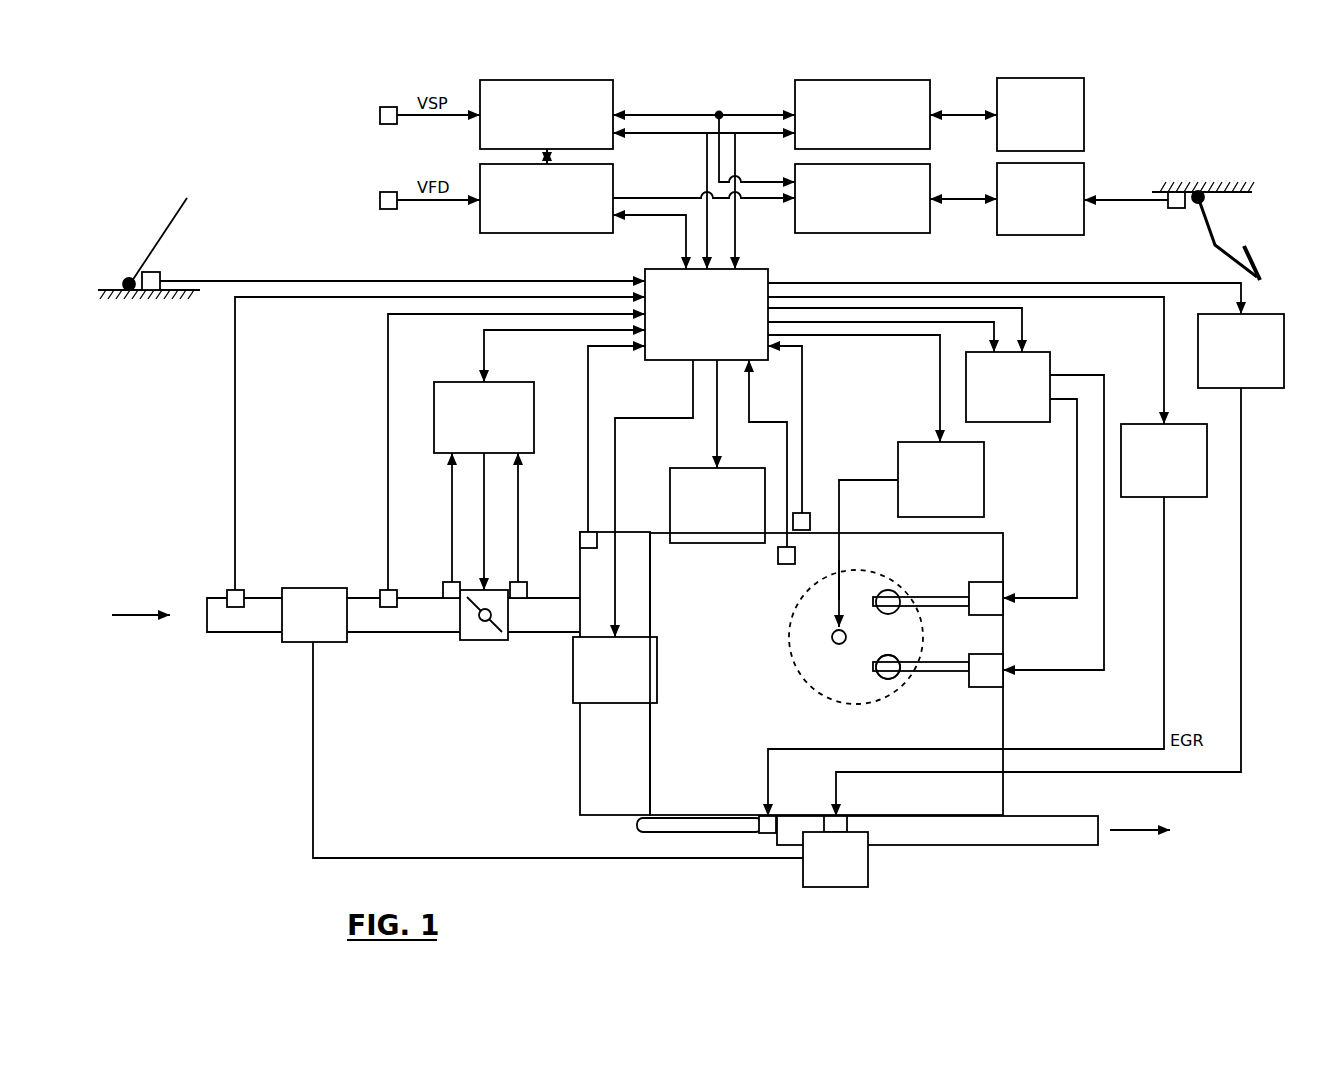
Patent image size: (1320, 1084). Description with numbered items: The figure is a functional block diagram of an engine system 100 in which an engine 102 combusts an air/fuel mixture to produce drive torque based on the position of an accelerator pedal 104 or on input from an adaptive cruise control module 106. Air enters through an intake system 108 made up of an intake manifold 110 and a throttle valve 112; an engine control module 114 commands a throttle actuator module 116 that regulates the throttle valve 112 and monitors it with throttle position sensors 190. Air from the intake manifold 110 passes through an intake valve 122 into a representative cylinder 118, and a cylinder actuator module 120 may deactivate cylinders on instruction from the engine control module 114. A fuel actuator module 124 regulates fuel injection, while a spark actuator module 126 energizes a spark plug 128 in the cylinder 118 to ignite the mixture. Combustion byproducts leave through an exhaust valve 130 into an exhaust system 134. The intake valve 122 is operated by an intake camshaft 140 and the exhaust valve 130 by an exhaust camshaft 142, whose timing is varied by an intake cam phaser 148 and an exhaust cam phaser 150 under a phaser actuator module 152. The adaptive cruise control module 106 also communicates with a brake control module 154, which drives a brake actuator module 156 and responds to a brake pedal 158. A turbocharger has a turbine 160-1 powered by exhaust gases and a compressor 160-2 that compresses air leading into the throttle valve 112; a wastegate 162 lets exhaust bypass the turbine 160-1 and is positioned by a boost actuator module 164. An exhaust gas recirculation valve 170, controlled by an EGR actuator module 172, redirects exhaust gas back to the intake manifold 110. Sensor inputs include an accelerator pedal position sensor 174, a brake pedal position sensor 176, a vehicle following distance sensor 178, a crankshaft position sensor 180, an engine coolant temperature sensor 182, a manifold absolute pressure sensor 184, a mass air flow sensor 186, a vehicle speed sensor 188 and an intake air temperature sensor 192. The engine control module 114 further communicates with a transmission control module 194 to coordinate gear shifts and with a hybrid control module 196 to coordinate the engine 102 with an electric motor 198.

The engine system 100 is at (182, 113).
The engine 102 is at (1003, 544).
The accelerator pedal 104 is at (146, 260).
The adaptive cruise control module 106 is at (613, 178).
The intake system 108 is at (441, 730).
The intake manifold 110 is at (580, 750).
The throttle valve 112 is at (480, 640).
The engine control module 114 is at (768, 272).
The throttle actuator module 116 is at (457, 382).
The cylinder 118 is at (815, 690).
The cylinder actuator module 120 is at (730, 468).
The intake valve 122 is at (892, 590).
The fuel actuator module 124 is at (640, 703).
The spark actuator module 126 is at (984, 481).
The spark plug 128 is at (833, 642).
The exhaust valve 130 is at (890, 679).
The exhaust system 134 is at (1063, 868).
The intake camshaft 140 is at (950, 597).
The exhaust camshaft 142 is at (948, 671).
The intake cam phaser 148 is at (985, 582).
The exhaust cam phaser 150 is at (985, 687).
The phaser actuator module 152 is at (1048, 360).
The brake control module 154 is at (930, 178).
The brake actuator module 156 is at (1084, 180).
The brake pedal 158 is at (1260, 266).
The turbine 160-1 is at (868, 868).
The compressor 160-2 is at (297, 642).
The wastegate 162 is at (847, 822).
The boost actuator module 164 is at (1260, 388).
The exhaust gas recirculation valve 170 is at (766, 833).
The EGR actuator module 172 is at (1180, 497).
The accelerator pedal position sensor 174 is at (158, 272).
The brake pedal position sensor 176 is at (1170, 208).
The vehicle following distance sensor 178 is at (380, 195).
The crankshaft position sensor 180 is at (808, 513).
The engine coolant temperature sensor 182 is at (786, 564).
The manifold absolute pressure sensor 184 is at (586, 532).
The mass air flow sensor 186 is at (380, 592).
The vehicle speed sensor 188 is at (380, 110).
The throttle position sensor 190 is at (448, 598).
The intake air temperature sensor 192 is at (228, 592).
The transmission control module 194 is at (613, 93).
The hybrid control module 196 is at (930, 93).
The electric motor 198 is at (1084, 93).